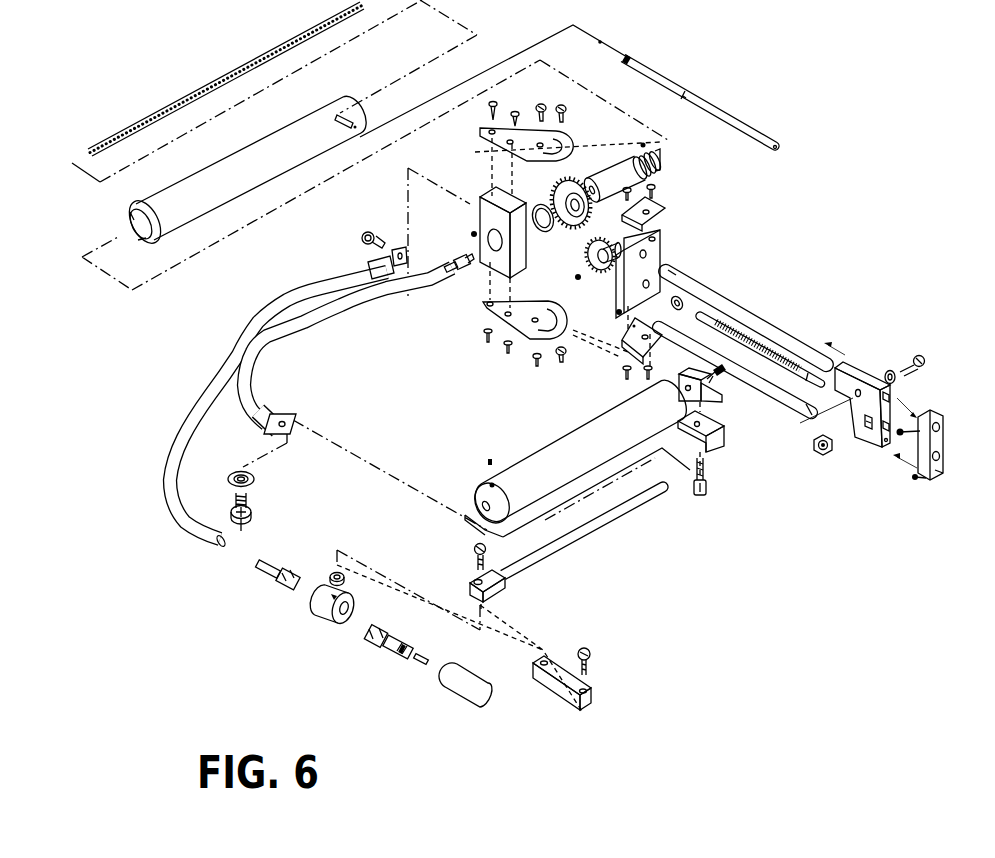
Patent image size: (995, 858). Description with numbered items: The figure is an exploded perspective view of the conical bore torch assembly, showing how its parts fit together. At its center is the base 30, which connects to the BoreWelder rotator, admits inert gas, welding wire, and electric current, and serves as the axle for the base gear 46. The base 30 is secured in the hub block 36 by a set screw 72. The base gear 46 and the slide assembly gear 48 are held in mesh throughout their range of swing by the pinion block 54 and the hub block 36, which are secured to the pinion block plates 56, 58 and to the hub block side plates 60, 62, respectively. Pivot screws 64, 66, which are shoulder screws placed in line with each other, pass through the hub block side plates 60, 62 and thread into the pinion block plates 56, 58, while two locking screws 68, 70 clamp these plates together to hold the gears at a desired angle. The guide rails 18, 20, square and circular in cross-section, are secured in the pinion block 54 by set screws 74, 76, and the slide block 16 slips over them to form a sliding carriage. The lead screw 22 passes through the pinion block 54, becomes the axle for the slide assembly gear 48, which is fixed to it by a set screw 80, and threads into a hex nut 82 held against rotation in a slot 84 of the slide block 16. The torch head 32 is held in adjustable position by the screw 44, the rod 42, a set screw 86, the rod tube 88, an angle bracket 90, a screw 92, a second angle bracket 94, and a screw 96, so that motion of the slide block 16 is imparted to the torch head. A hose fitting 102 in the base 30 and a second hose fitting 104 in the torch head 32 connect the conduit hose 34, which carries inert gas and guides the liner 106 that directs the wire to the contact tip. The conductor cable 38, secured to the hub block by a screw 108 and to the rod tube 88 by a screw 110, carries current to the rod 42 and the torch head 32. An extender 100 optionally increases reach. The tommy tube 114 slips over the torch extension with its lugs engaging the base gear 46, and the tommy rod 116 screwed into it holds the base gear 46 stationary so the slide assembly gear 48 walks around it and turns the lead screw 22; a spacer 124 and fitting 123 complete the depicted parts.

The slide block 16 is at (864, 373).
The guide rail 18 is at (795, 402).
The guide rail 20 is at (752, 313).
The lead screw 22 is at (762, 343).
The base 30 is at (670, 178).
The torch head 32 is at (308, 643).
The conduit hose 34 is at (296, 338).
The hub block 36 is at (517, 270).
The conductor cable 38 is at (264, 315).
The rod 42 is at (598, 524).
The screw 44 is at (471, 548).
The base gear 46 is at (562, 216).
The slide assembly gear 48 is at (657, 238).
The pinion block 54 is at (658, 255).
The pinion block plate 56 is at (648, 344).
The pinion block plate 58 is at (665, 212).
The hub block side plate 60 is at (484, 306).
The hub block side plate 62 is at (577, 142).
The pivot screw 64 is at (536, 364).
The pivot screw 66 is at (539, 106).
The locking screw 68 is at (562, 362).
The locking screw 70 is at (565, 104).
The set screw 72 is at (473, 231).
The set screw 74 is at (616, 311).
The set screw 76 is at (680, 283).
The set screw 80 is at (581, 278).
The nut 82 is at (820, 456).
The slot 84 is at (866, 430).
The set screw 86 is at (486, 463).
The rod tube 88 is at (578, 450).
The angle bracket 90 is at (718, 447).
The screw 92 is at (710, 370).
The second angle bracket 94 is at (719, 396).
The screw 96 is at (699, 497).
The extender 100 is at (562, 668).
The hose fitting 102 is at (452, 259).
The second hose fitting 104 is at (270, 577).
The liner 106 is at (203, 85).
The screw 108 is at (367, 232).
The screw 110 is at (248, 520).
The tommy tube 114 is at (202, 182).
The tommy rod 116 is at (700, 100).
The fitting 123 is at (382, 644).
The spacer 124 is at (333, 572).